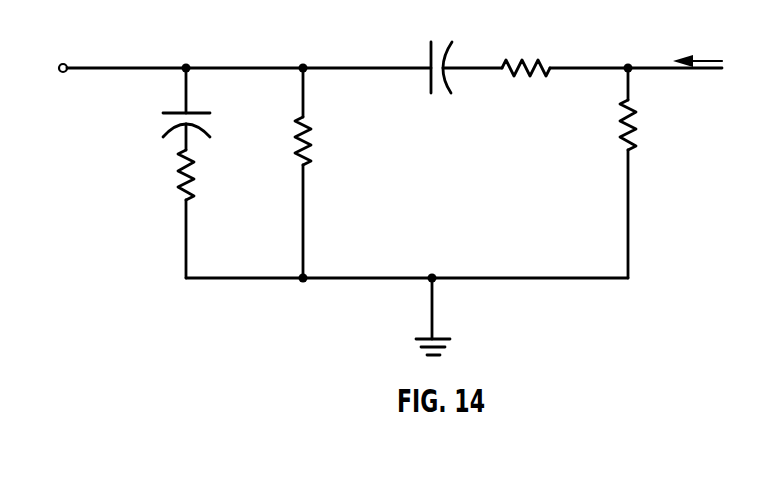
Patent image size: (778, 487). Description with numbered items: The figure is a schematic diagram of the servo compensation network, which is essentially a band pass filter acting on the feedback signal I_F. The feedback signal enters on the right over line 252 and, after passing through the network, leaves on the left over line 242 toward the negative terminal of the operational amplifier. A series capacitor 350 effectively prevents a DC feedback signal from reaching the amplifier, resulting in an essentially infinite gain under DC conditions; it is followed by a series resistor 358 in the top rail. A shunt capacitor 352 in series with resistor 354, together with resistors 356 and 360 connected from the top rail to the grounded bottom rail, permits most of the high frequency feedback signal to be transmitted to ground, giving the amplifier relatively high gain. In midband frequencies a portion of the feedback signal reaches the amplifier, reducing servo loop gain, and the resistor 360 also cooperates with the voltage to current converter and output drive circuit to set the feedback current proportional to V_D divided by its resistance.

The line 242 is at (112, 64).
The output line carrying current I_F 252 is at (662, 70).
The capacitor 350 is at (452, 44).
The capacitor 352 is at (197, 112).
The resistor 354 is at (196, 188).
The resistor 356 is at (310, 134).
The resistor 358 is at (525, 62).
The resistor 360 is at (633, 137).